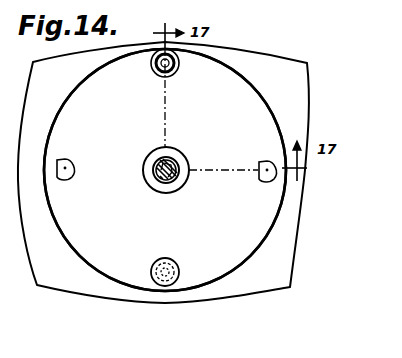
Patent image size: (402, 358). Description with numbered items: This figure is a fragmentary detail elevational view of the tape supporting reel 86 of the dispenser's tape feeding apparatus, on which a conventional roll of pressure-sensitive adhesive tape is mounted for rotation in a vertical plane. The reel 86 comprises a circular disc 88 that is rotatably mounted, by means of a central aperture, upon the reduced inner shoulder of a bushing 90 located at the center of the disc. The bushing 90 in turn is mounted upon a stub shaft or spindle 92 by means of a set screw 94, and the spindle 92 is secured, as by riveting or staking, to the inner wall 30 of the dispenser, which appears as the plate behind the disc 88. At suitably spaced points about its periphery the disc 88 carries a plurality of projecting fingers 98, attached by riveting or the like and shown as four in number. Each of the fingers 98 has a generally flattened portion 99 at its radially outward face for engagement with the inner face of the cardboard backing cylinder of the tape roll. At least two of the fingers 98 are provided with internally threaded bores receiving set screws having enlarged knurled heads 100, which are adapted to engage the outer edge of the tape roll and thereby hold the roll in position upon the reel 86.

The inner wall 30 is at (268, 287).
The reel 86 is at (244, 118).
The circular disc 88 is at (90, 252).
The bushing 90 is at (188, 161).
The stub shaft or spindle 92 is at (149, 161).
The set screw 94 is at (172, 181).
The projecting fingers 98 is at (153, 72).
The flattened portion 99 is at (62, 159).
The enlarged knurled heads 100 is at (179, 63).